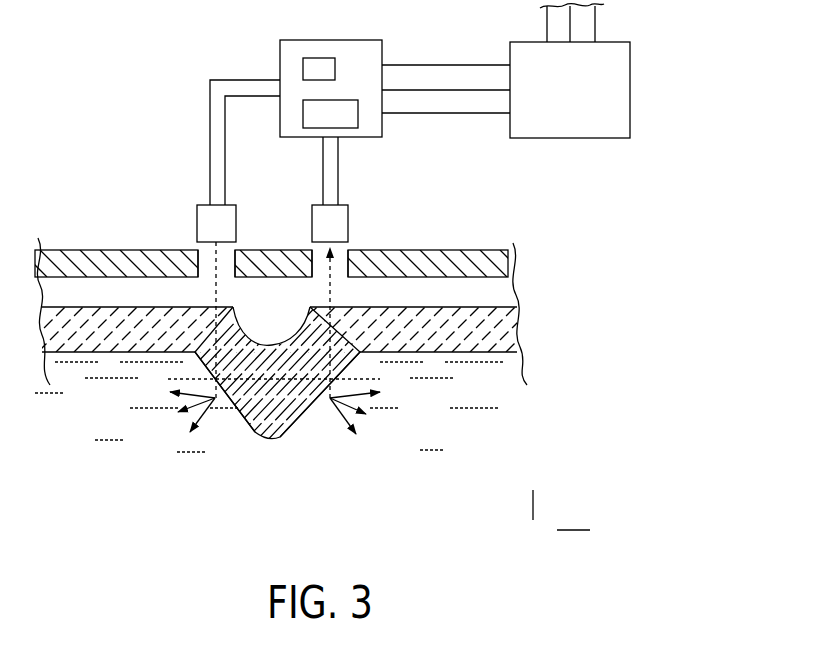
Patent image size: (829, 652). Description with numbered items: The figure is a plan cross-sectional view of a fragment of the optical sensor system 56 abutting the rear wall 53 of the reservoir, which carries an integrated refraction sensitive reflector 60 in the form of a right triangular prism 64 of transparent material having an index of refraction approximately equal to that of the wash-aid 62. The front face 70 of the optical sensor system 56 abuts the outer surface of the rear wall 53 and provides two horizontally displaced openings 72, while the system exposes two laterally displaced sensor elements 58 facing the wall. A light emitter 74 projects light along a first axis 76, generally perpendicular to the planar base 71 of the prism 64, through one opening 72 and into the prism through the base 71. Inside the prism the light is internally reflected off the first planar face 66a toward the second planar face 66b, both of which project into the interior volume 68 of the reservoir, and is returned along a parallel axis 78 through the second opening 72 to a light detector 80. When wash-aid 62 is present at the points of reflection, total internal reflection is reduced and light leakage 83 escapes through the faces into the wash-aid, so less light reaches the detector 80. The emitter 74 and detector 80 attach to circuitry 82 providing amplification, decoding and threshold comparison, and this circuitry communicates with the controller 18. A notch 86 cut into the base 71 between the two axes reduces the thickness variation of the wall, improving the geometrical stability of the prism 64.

The controller 18 is at (585, 109).
The rear wall 53 is at (286, 277).
The optical sensor system 56 is at (390, 200).
The sensor elements 58 is at (352, 278).
The refraction sensitive reflector 60 is at (368, 438).
The wash-aid 62 is at (458, 423).
The right triangular prism 64 is at (314, 405).
The first planar face 66a is at (230, 404).
The second planar face 66b is at (310, 410).
The interior volume 68 is at (398, 509).
The front face 70 is at (113, 250).
The base 71 is at (415, 307).
The openings 72 is at (190, 246).
The light emitter 74 is at (234, 207).
The first axis 76 is at (530, 510).
The return axis 78 is at (570, 530).
The light detector 80 is at (348, 208).
The circuitry 82 is at (332, 40).
The light leakage 83 is at (212, 398).
The notch 86 is at (272, 344).